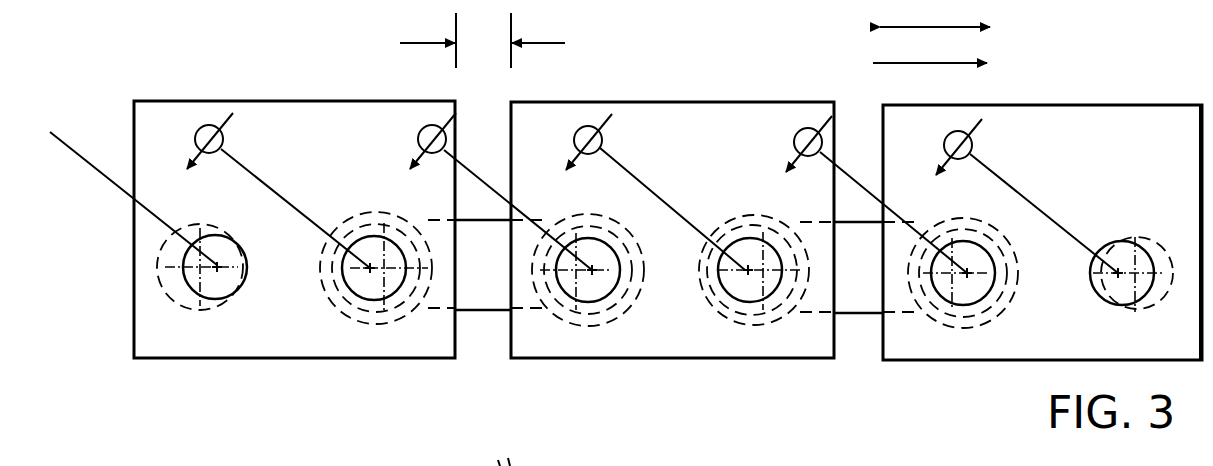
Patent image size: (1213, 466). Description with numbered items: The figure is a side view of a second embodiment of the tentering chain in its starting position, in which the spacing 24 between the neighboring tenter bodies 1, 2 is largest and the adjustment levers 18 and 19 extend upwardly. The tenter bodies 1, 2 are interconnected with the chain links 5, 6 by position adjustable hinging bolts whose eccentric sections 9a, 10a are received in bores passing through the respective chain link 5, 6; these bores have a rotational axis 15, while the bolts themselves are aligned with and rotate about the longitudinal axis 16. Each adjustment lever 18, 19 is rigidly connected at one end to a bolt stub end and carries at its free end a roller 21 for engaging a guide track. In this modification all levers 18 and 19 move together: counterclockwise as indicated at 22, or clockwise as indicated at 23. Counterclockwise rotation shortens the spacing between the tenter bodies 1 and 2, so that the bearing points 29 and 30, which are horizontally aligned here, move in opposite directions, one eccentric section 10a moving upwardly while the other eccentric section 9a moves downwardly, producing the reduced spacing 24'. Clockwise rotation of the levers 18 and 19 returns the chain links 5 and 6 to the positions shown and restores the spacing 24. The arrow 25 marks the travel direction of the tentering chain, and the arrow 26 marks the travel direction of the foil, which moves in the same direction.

The tenter body 1 is at (740, 343).
The tenter body 2 is at (930, 345).
The chain link 5 is at (472, 287).
The chain link 6 is at (852, 300).
The eccentric section 9a is at (577, 303).
The eccentric section 10a is at (407, 240).
The rotational axis 15 is at (747, 277).
The longitudinal axis 16 is at (767, 280).
The adjustment lever 18 is at (657, 200).
The adjustment lever 19 is at (867, 190).
The roller 21 is at (587, 128).
The counterclockwise movement direction 22 is at (577, 155).
The clockwise movement direction 23 is at (790, 160).
The spacing 24 is at (482, 40).
The reduced spacing 24' is at (551, 450).
The travel direction of the tentering chain 25 is at (923, 28).
The travel direction of the foil 26 is at (927, 65).
The bearing point 29 is at (333, 287).
The bearing point 30 is at (637, 263).